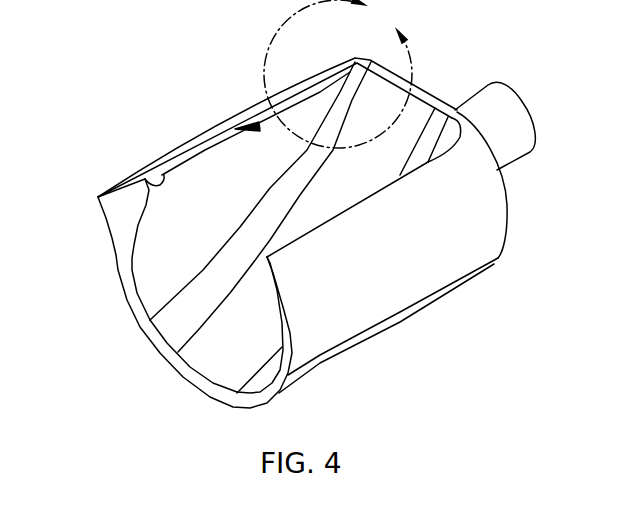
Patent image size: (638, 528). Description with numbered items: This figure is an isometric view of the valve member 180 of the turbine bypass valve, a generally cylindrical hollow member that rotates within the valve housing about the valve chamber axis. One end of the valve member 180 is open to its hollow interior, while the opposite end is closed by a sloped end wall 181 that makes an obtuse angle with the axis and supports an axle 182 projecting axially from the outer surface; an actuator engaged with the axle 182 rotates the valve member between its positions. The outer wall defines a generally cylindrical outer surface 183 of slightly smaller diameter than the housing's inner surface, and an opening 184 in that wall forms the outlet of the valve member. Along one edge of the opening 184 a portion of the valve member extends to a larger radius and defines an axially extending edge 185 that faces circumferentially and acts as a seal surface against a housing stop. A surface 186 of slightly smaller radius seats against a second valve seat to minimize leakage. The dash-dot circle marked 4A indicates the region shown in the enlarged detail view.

The valve member 180 is at (195, 138).
The sloped end wall 181 is at (380, 177).
The axle 182 is at (523, 108).
The cylindrical outer surface 183 is at (465, 223).
The opening 184 is at (313, 202).
The axially extending edge 185 is at (258, 128).
The surface 186 is at (98, 197).
The detail view region 4A is at (338, 74).